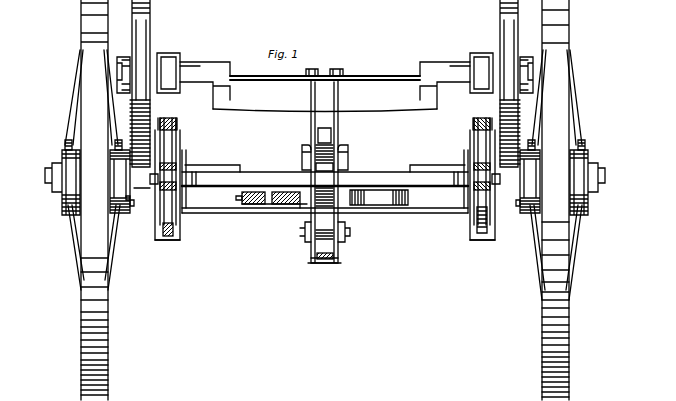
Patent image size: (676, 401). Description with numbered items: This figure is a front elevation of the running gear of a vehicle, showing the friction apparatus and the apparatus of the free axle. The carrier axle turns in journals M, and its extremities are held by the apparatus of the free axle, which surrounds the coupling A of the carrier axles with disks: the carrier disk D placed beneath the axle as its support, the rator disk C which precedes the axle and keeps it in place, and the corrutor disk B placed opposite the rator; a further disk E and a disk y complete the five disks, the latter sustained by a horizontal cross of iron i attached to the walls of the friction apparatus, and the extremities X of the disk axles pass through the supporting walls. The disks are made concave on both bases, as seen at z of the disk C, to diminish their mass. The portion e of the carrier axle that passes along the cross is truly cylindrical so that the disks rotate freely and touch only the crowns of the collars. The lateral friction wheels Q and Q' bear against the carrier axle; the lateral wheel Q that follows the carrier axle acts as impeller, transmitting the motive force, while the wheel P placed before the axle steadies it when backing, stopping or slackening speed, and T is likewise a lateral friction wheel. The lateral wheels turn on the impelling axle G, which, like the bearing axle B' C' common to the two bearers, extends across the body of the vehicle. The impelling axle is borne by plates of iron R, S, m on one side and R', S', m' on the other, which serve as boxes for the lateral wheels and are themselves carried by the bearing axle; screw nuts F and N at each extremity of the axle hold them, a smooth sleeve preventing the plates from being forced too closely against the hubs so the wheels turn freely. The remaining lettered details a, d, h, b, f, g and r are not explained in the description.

The plate of iron R is at (148, 66).
The plate of iron R' is at (501, 66).
The bearing axle B' is at (205, 85).
The rator disk C is at (445, 85).
The disk y is at (325, 76).
The frame plate h is at (325, 91).
The lug a is at (313, 72).
The lug d is at (340, 72).
The coupling of the carrier axles A is at (325, 171).
The disk E is at (325, 149).
The carrier disk D is at (324, 167).
The casing bottom b is at (321, 263).
The casing plate f is at (329, 261).
The impelling axle G is at (325, 177).
The lateral wheel P is at (325, 179).
The collar g is at (325, 179).
The lateral friction wheel T is at (325, 210).
The bearing axle C' is at (274, 216).
The clutch block r is at (271, 191).
The corrutor disk B is at (379, 197).
The plate of iron m is at (172, 186).
The plate of iron m' is at (476, 186).
The portion of the carrier axle e is at (325, 179).
The lateral friction wheel Q is at (325, 182).
The lateral friction wheel Q' is at (482, 116).
The plate of iron S is at (167, 247).
The plate of iron S' is at (486, 247).
The horizontal cross of iron i is at (321, 83).
The journal of the carrier axle M is at (325, 181).
The screw nut N is at (322, 191).
The extremity of disk axle X is at (325, 209).
The screw nut F is at (140, 192).
The concave base of disk z is at (185, 206).